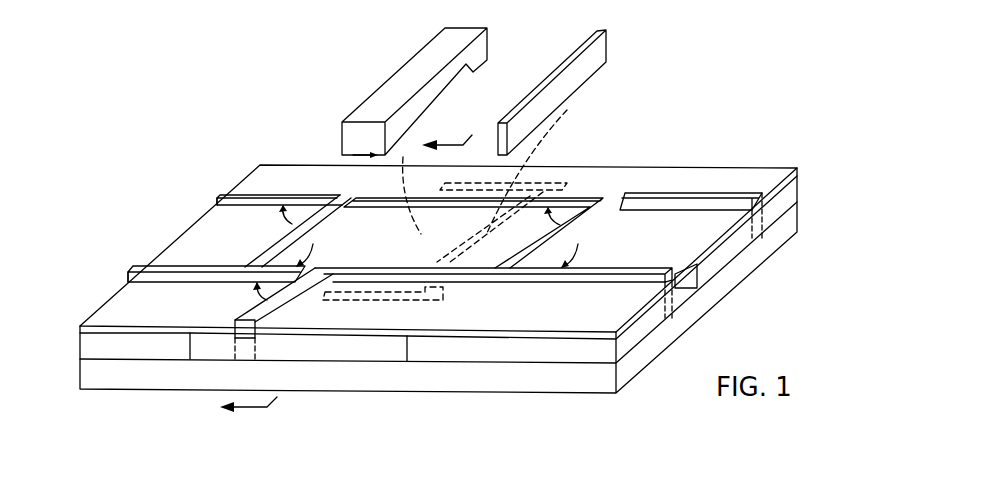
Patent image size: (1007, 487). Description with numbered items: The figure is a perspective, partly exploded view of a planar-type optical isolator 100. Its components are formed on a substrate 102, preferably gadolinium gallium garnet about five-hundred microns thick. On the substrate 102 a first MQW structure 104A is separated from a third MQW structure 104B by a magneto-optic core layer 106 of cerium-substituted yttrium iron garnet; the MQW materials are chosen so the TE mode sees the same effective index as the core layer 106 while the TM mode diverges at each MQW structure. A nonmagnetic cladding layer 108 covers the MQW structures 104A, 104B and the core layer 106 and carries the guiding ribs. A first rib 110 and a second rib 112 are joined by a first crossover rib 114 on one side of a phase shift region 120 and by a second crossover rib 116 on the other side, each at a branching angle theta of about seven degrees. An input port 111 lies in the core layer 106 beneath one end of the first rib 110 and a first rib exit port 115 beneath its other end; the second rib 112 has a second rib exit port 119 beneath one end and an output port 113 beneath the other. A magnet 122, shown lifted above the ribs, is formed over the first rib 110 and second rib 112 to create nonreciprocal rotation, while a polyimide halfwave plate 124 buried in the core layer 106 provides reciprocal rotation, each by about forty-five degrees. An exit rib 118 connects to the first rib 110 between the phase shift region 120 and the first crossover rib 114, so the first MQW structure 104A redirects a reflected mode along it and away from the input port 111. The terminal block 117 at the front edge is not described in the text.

The planar-type optical isolator 100 is at (712, 80).
The substrate 102 is at (477, 394).
The first MQW structure 104A is at (93, 350).
The third MQW structure 104B is at (582, 350).
The core layer 106 is at (343, 352).
The cladding layer 108 is at (704, 176).
The first rib 110 is at (140, 265).
The input port 111 is at (114, 277).
The second rib 112 is at (253, 190).
The output port 113 is at (775, 217).
The first crossover rib 114 is at (325, 215).
The first rib exit port 115 is at (686, 299).
The second crossover rib 116 is at (597, 195).
The front left terminal block 117 is at (236, 352).
The exit rib 118 is at (278, 298).
The second rib exit port 119 is at (206, 191).
The phase shift region 120 is at (560, 172).
The magnet 122 is at (412, 66).
The polyimide halfwave plate 124 is at (607, 31).